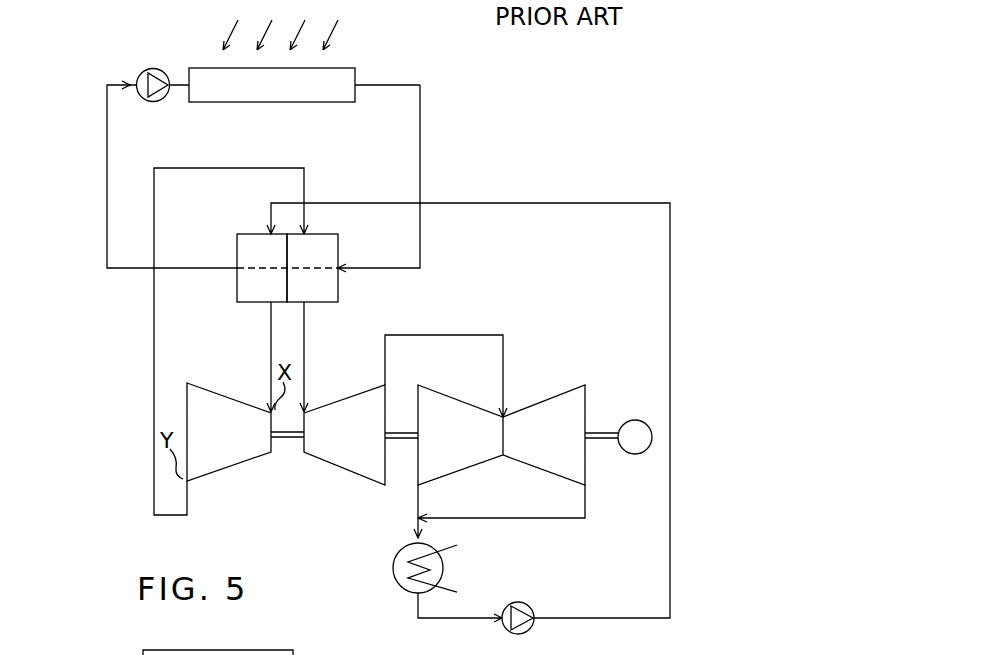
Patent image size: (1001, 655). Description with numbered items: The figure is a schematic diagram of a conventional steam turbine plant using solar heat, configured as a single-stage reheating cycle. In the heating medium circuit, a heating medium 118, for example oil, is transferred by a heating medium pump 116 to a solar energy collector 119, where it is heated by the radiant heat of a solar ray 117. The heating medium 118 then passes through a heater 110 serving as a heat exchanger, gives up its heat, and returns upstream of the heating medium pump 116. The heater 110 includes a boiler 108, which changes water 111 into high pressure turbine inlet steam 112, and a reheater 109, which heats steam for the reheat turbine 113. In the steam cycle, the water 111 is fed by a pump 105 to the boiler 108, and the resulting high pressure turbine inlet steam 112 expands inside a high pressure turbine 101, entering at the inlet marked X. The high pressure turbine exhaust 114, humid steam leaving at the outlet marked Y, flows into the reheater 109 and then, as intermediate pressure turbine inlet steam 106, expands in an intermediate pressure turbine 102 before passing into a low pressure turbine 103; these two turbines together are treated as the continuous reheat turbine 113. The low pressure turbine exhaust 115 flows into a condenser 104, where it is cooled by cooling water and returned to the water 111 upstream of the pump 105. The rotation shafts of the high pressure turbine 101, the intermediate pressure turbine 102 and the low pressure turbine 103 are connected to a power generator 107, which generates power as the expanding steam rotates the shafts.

The high pressure turbine 101 is at (233, 466).
The intermediate pressure turbine 102 is at (336, 466).
The low pressure turbine 103 is at (550, 398).
The condenser 104 is at (393, 568).
The pump 105 is at (518, 602).
The intermediate pressure turbine inlet steam 106 is at (304, 352).
The power generator 107 is at (635, 420).
The boiler 108 is at (237, 283).
The reheater 109 is at (318, 302).
The heater 110 is at (195, 297).
The water 111 is at (556, 203).
The high pressure turbine inlet steam 112 is at (271, 367).
The reheat turbine 113 is at (515, 385).
The high pressure turbine exhaust 114 is at (154, 467).
The low pressure turbine exhaust 115 is at (418, 497).
The heating medium pump 116 is at (157, 68).
The solar ray 117 is at (351, 43).
The heating medium 118 is at (107, 158).
The solar energy collector 119 is at (288, 103).